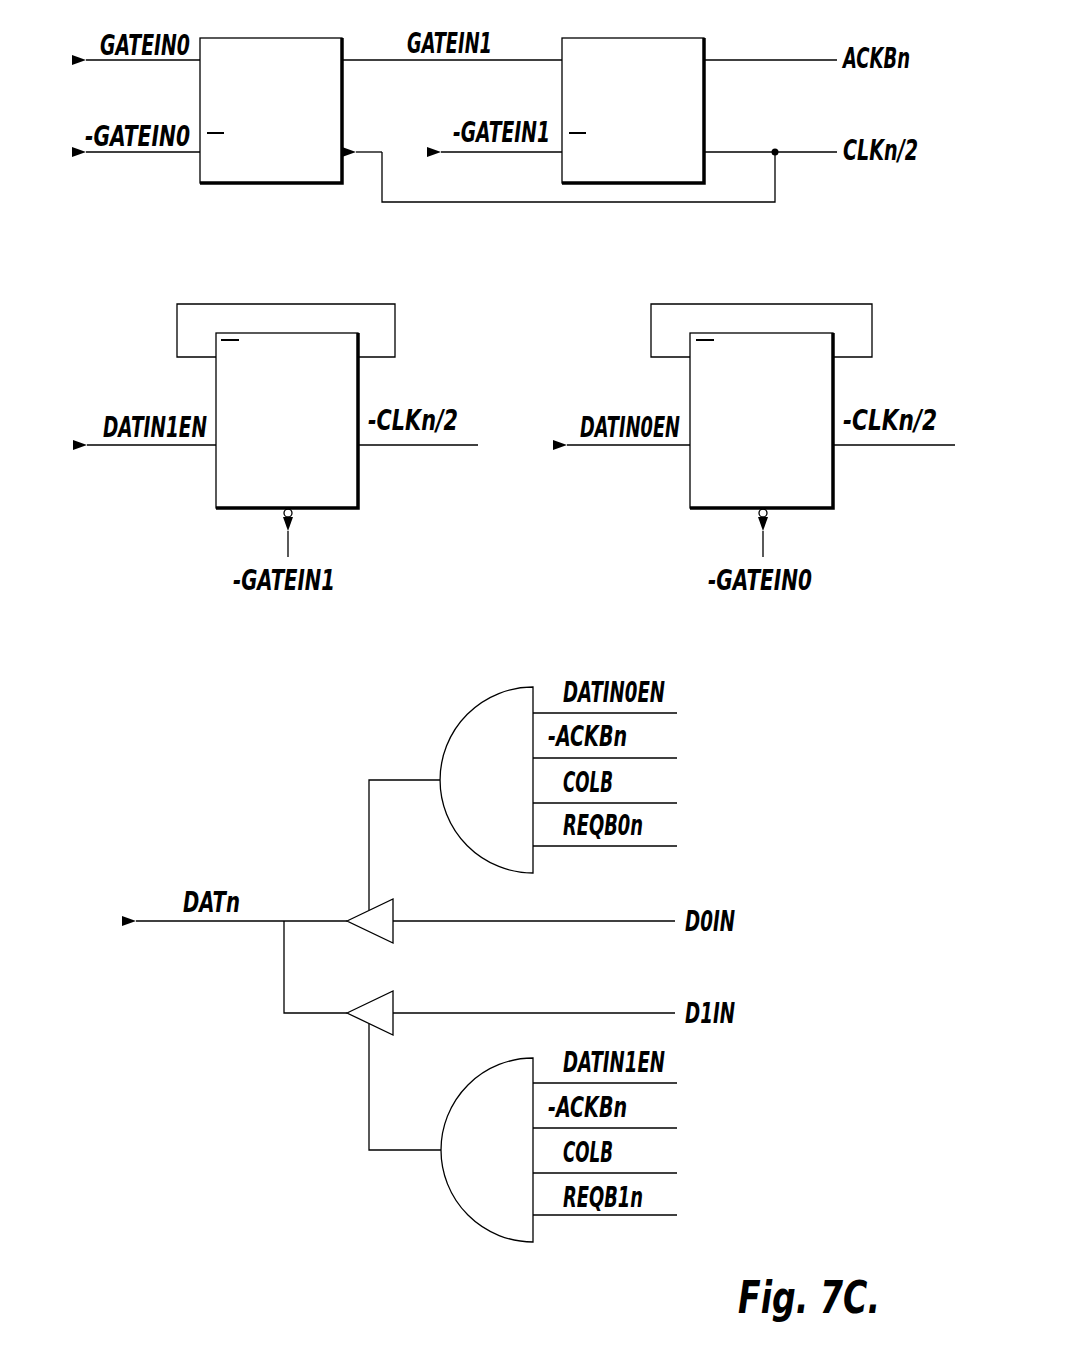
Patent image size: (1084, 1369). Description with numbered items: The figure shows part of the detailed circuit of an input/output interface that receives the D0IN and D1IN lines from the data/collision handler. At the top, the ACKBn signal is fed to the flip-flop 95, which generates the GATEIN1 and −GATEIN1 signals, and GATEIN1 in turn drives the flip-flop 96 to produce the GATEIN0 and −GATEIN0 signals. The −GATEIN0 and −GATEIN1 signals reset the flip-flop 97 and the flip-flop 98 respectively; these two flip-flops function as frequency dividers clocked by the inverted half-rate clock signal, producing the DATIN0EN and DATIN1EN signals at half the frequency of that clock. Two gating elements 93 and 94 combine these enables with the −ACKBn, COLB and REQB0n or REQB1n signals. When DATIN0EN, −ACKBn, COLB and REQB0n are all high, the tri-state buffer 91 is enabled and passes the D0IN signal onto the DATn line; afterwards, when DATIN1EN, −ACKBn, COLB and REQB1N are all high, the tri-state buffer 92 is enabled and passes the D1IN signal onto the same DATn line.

The tri-state buffer 91 is at (360, 928).
The tri-state buffer 92 is at (360, 1020).
The AND gate 93 is at (467, 722).
The AND gate 94 is at (466, 1208).
The flip-flop 95 is at (601, 38).
The flip-flop 96 is at (241, 38).
The flip-flop 97 is at (815, 508).
The flip-flop 98 is at (340, 508).